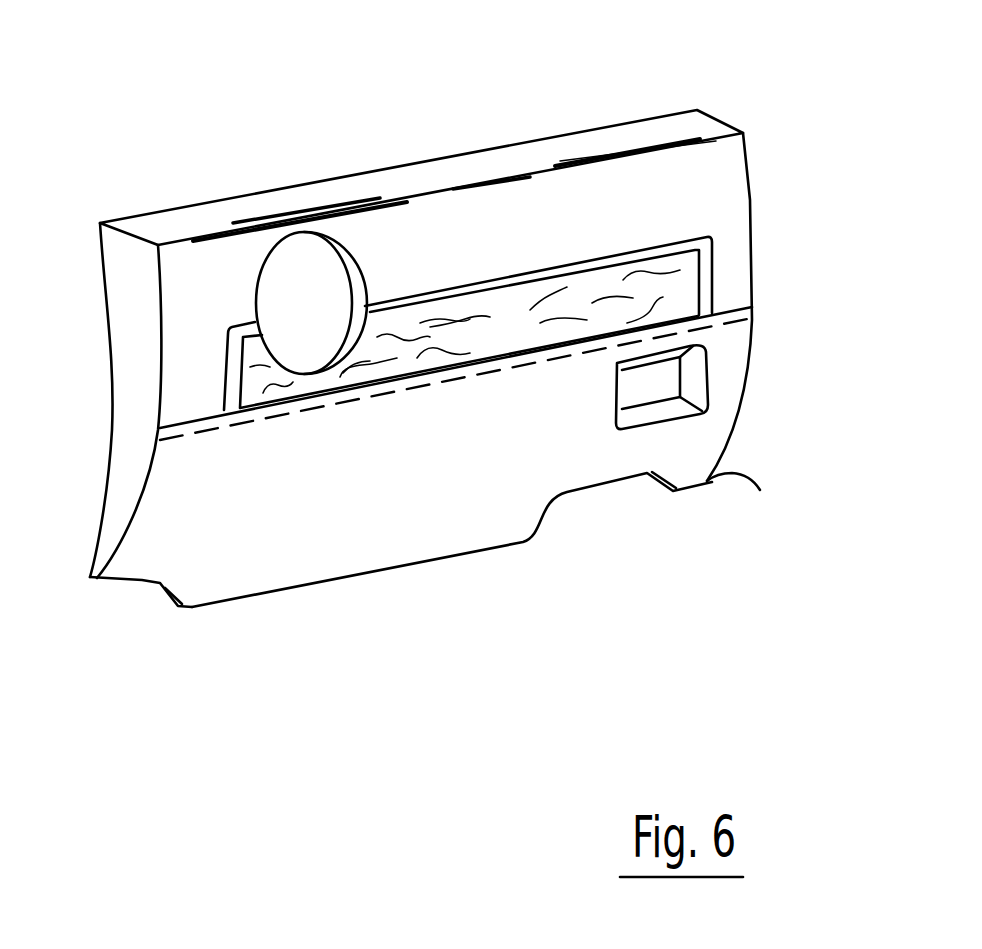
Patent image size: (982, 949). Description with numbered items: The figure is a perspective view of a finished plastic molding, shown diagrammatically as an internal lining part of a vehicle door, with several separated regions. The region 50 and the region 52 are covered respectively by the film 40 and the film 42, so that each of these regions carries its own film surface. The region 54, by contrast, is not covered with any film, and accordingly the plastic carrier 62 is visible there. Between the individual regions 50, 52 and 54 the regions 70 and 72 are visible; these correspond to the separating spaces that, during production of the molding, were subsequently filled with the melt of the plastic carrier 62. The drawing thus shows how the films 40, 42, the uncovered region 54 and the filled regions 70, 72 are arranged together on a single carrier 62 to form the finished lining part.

The film 40 is at (507, 215).
The film 42 is at (440, 328).
The region 50 is at (697, 180).
The region 52 is at (667, 283).
The region 54 is at (677, 443).
The plastic carrier 62 is at (477, 465).
The region 70 is at (405, 318).
The region 72 is at (197, 425).